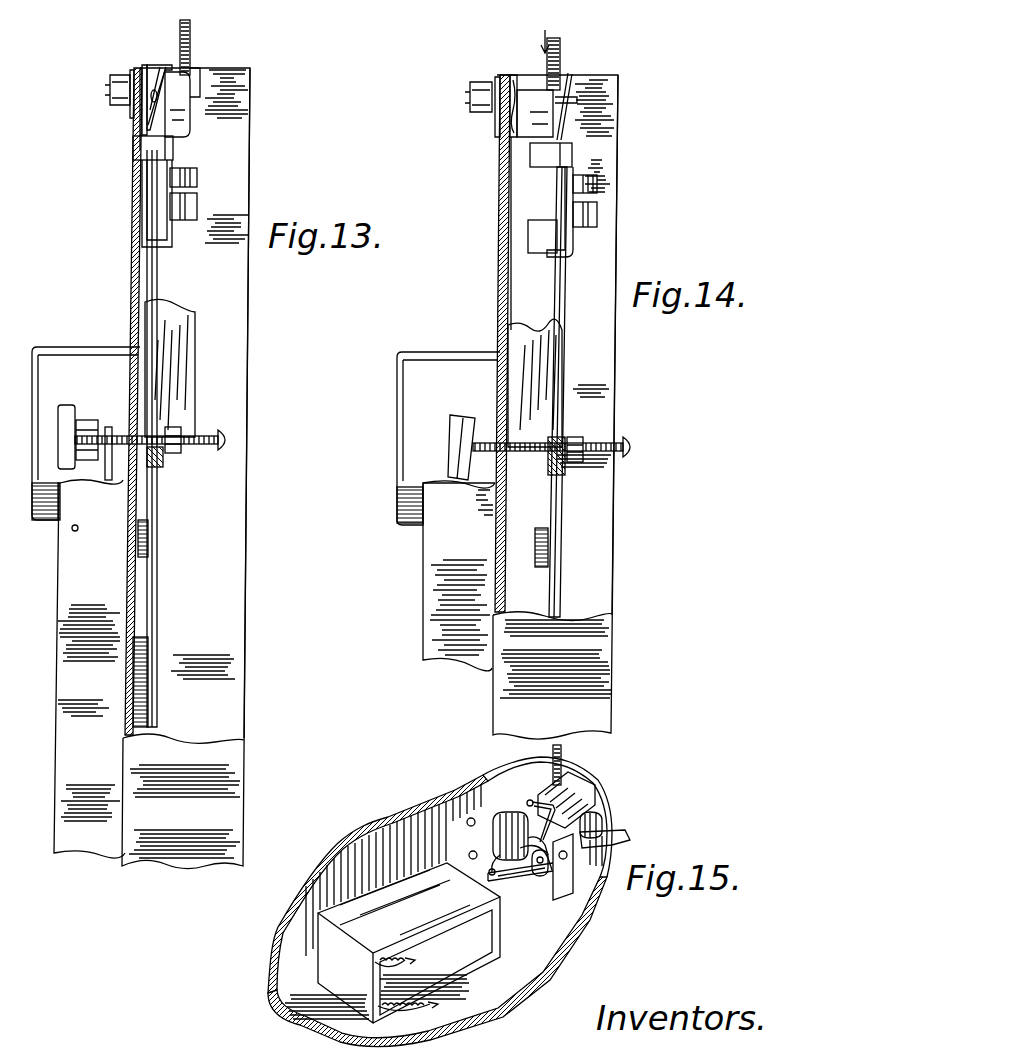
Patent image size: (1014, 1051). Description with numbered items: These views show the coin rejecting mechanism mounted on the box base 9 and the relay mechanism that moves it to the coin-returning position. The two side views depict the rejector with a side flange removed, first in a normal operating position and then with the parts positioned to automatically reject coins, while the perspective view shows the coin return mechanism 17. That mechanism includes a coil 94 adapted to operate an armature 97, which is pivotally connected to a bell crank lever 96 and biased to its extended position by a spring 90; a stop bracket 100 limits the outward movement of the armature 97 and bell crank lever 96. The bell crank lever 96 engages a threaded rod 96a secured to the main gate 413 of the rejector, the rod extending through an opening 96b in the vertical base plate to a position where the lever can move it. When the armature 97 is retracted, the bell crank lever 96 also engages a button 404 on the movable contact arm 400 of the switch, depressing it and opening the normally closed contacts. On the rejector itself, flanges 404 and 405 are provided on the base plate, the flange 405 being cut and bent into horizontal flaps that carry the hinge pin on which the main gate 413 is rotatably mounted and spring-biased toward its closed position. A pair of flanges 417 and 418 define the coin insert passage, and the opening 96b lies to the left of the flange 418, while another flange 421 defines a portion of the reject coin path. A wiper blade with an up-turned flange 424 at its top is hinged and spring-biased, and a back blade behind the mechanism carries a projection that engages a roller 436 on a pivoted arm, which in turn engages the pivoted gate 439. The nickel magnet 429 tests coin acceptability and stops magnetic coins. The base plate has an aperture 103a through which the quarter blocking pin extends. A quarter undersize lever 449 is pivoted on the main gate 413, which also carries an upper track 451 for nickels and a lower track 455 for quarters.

In FIG. 15, the base 9 is at (580, 925).
In FIG. 15, the coin return mechanism 17 is at (409, 943).
In FIG. 15, the spring 90 is at (525, 818).
In FIG. 15, the coil 94 is at (530, 945).
In FIG. 13, the bell crank lever 96 is at (62, 402).
In FIG. 14, the bell crank lever 96 is at (427, 433).
In FIG. 15, the bell crank lever 96 is at (585, 800).
In FIG. 13, the threaded rod 96a is at (213, 435).
In FIG. 14, the threaded rod 96a is at (598, 440).
In FIG. 15, the threaded rod 96a is at (562, 752).
In FIG. 13, the opening 96b is at (143, 432).
In FIG. 14, the opening 96b is at (510, 440).
In FIG. 15, the armature 97 is at (542, 893).
In FIG. 15, the stop bracket 100 is at (574, 882).
In FIG. 13, the aperture 103a is at (132, 165).
In FIG. 14, the aperture 103a is at (505, 165).
In FIG. 15, the movable contact arm 400 is at (620, 833).
In FIG. 13, the button 404 is at (243, 788).
In FIG. 14, the button 404 is at (592, 683).
In FIG. 15, the button 404 is at (620, 826).
In FIG. 13, the flange 405 is at (222, 712).
In FIG. 14, the flange 405 is at (600, 600).
In FIG. 13, the main gate 413 is at (153, 268).
In FIG. 14, the main gate 413 is at (560, 283).
In FIG. 13, the flange 417 is at (150, 72).
In FIG. 14, the flange 417 is at (525, 78).
In FIG. 13, the flange 418 is at (185, 110).
In FIG. 14, the flange 418 is at (548, 124).
In FIG. 13, the flange 421 is at (185, 350).
In FIG. 14, the flange 421 is at (522, 363).
In FIG. 13, the up-turned flange 424 is at (193, 72).
In FIG. 14, the up-turned flange 424 is at (573, 100).
In FIG. 13, the nickel magnet 429 is at (105, 355).
In FIG. 14, the nickel magnet 429 is at (435, 368).
In FIG. 13, the roller 436 is at (90, 425).
In FIG. 14, the roller 436 is at (461, 447).
In FIG. 13, the gate 439 is at (98, 528).
In FIG. 13, the quarter undersize lever 449 is at (163, 147).
In FIG. 14, the quarter undersize lever 449 is at (578, 158).
In FIG. 13, the upper track 451 is at (150, 538).
In FIG. 14, the upper track 451 is at (548, 548).
In FIG. 13, the lower track 455 is at (142, 645).